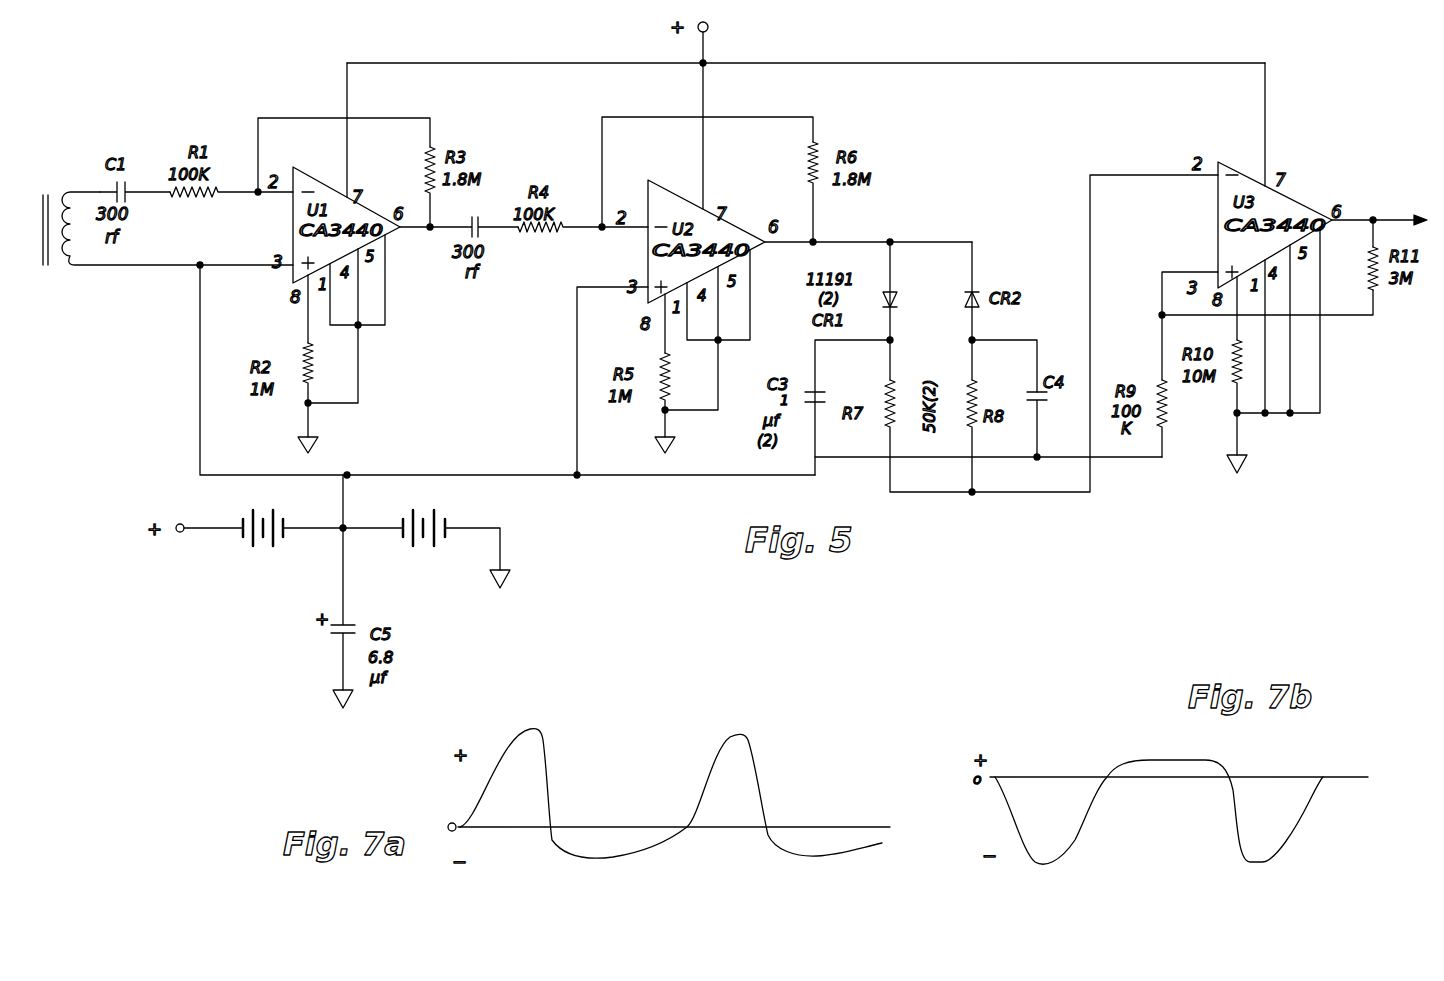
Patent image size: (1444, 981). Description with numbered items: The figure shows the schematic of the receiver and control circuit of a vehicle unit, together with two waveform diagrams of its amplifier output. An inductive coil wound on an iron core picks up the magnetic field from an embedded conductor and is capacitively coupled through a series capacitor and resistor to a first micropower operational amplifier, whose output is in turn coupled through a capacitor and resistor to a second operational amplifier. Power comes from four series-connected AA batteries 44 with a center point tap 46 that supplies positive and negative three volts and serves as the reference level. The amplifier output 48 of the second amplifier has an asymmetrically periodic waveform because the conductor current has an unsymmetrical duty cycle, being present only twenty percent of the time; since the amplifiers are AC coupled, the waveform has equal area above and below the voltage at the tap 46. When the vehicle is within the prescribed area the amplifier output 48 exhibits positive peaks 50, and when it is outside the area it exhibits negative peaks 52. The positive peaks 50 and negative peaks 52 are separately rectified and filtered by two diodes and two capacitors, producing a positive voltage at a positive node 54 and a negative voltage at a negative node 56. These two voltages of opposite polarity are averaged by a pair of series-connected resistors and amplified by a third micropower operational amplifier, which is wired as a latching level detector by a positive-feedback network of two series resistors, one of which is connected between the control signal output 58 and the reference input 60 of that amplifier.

In FIG. 5, the battery 44 is at (240, 540).
In FIG. 5, the center point tap 46 is at (343, 528).
In FIG. 5, the amplifier output 48 is at (848, 243).
In FIG. 5, the positive node 54 is at (890, 340).
In FIG. 5, the negative node 56 is at (975, 338).
In FIG. 5, the control signal output 58 is at (1378, 219).
In FIG. 5, the reference input 60 is at (1178, 270).
In FIG. 7A, the positive peaks 50 is at (541, 729).
In FIG. 7B, the negative peaks 52 is at (1058, 862).